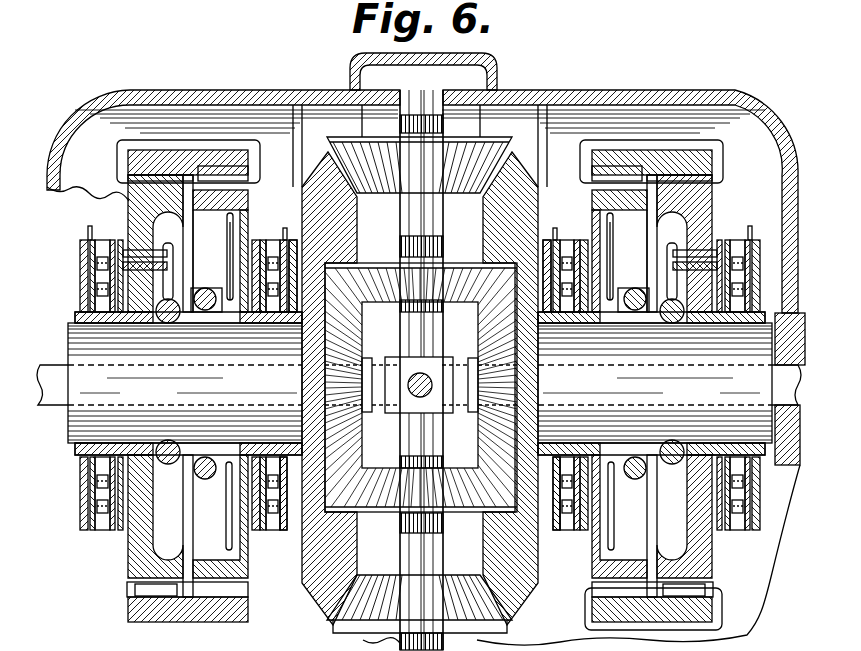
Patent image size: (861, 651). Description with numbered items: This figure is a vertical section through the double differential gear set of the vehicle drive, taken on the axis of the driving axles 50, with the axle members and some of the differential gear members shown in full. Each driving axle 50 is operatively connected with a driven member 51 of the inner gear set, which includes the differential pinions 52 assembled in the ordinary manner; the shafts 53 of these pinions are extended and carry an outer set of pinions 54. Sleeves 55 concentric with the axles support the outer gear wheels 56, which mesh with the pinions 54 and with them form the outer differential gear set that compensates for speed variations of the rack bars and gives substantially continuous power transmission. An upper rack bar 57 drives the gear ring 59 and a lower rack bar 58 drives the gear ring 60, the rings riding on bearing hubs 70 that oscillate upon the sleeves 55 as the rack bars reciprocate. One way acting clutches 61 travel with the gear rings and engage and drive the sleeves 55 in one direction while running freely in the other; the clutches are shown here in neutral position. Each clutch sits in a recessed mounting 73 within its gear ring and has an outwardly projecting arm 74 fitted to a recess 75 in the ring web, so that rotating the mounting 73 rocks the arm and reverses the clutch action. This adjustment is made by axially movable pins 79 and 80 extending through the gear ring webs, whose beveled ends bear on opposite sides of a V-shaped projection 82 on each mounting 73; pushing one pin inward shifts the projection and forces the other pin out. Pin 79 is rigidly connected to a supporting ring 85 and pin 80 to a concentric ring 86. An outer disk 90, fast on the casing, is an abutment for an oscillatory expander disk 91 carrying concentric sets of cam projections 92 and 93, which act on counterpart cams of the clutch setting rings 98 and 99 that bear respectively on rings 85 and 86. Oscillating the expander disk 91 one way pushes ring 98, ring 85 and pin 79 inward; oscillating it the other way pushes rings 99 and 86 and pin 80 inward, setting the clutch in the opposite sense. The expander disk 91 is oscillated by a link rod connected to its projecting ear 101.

The driving axle 50 is at (419, 385).
The driven member 51 is at (358, 436).
The differential pinion 52 is at (446, 238).
The shaft 53 is at (410, 216).
The outer pinion 54 is at (463, 195).
The sleeve 55 is at (420, 383).
The outer gear wheel 56 is at (322, 169).
The upper rack bar 57 is at (240, 166).
The lower rack bar 58 is at (135, 607).
The gear ring 59 is at (245, 200).
The gear ring 60 is at (140, 210).
The one way acting clutch 61 is at (215, 290).
The bearing hub 70 is at (75, 318).
The recessed mounting 73 is at (185, 300).
The outwardly projecting arm 74 is at (228, 237).
The recess 75 is at (227, 215).
The axially movable pin 79 is at (168, 267).
The axially movable pin 80 is at (168, 255).
The V-shaped projection 82 is at (175, 250).
The supporting ring 85 is at (122, 483).
The ring 86 is at (120, 533).
The outer disk 90 is at (82, 240).
The expander disk 91 is at (88, 532).
The cam projection 92 is at (90, 290).
The cam projection 93 is at (93, 238).
The clutch setting ring 98 is at (110, 472).
The clutch setting ring 99 is at (103, 533).
The projecting ear 101 is at (90, 228).